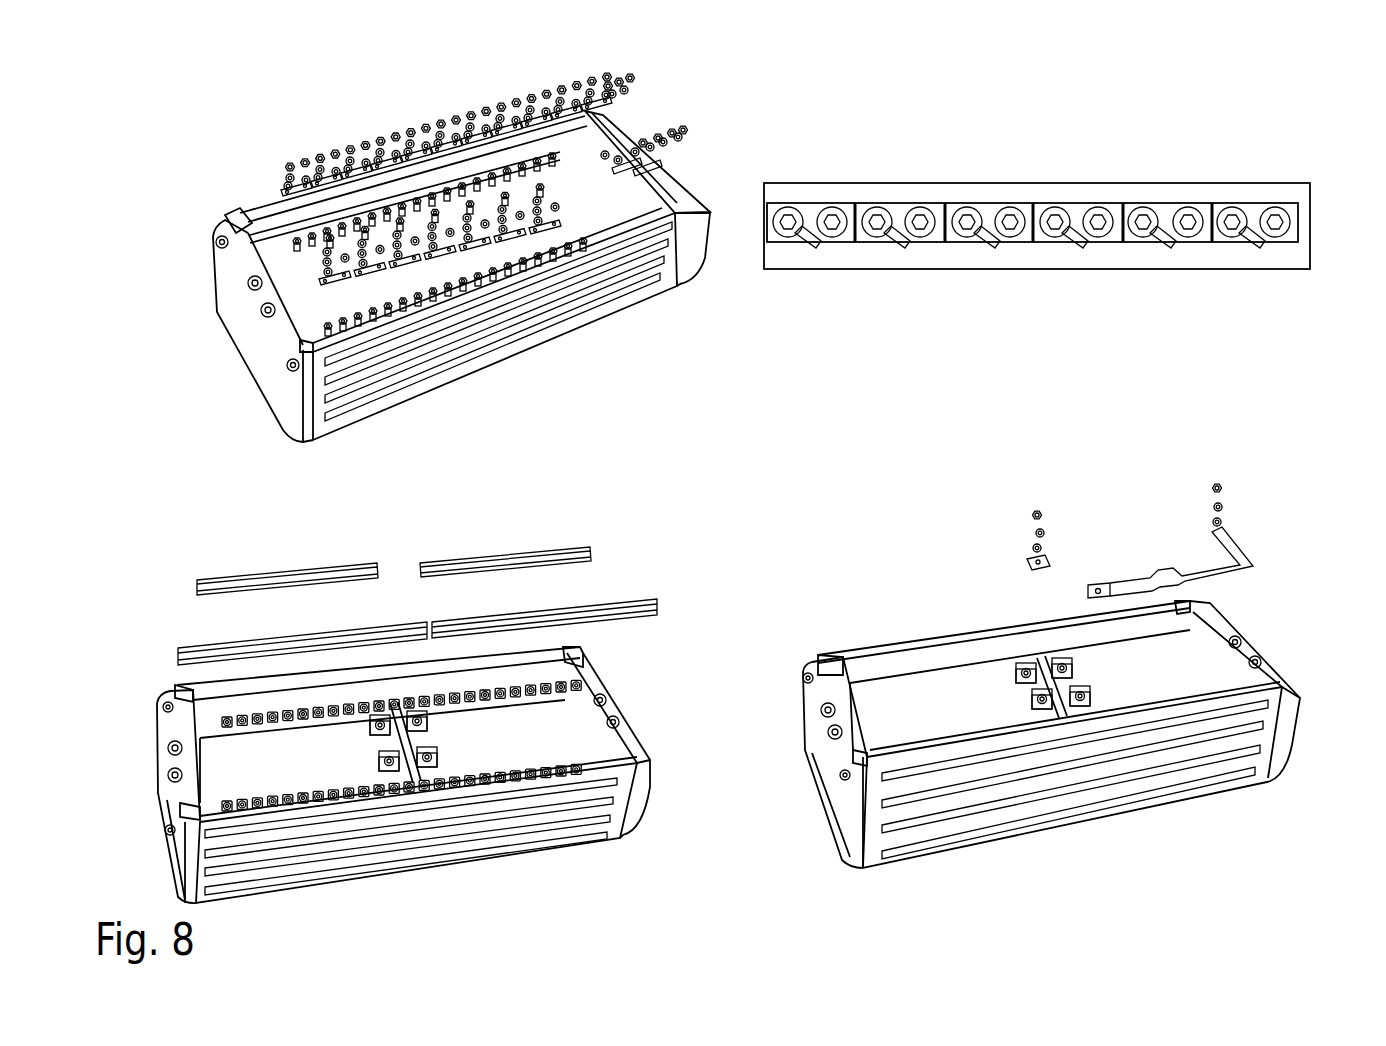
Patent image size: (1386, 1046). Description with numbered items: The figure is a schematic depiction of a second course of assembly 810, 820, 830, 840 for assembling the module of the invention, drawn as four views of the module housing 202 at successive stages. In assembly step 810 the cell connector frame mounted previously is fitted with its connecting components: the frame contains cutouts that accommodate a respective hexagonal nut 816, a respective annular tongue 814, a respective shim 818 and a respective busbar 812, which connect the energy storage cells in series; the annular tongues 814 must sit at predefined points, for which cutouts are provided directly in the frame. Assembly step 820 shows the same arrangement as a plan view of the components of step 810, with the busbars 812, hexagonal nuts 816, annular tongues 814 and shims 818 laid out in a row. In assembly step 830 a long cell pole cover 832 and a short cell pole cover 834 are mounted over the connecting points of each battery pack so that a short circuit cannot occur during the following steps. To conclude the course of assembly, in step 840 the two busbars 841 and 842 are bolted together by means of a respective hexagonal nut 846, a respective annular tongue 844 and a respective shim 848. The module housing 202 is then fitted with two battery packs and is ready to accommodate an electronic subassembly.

The assembly step 810 is at (225, 165).
The busbar 812 is at (693, 155).
The annular tongue 814 is at (462, 118).
The hexagonal nut 816 is at (488, 108).
The shim 818 is at (633, 88).
The assembly step 820 is at (820, 158).
The module housing 202 is at (553, 318).
The assembly step 830 is at (200, 553).
The long cell pole cover 832 is at (385, 637).
The short cell pole cover 834 is at (428, 558).
The assembly step 840 is at (833, 552).
The busbar 841 is at (1238, 582).
The busbar 842 is at (1018, 570).
The annular tongue 844 is at (1210, 508).
The hexagonal nut 846 is at (1212, 484).
The shim 848 is at (1228, 527).